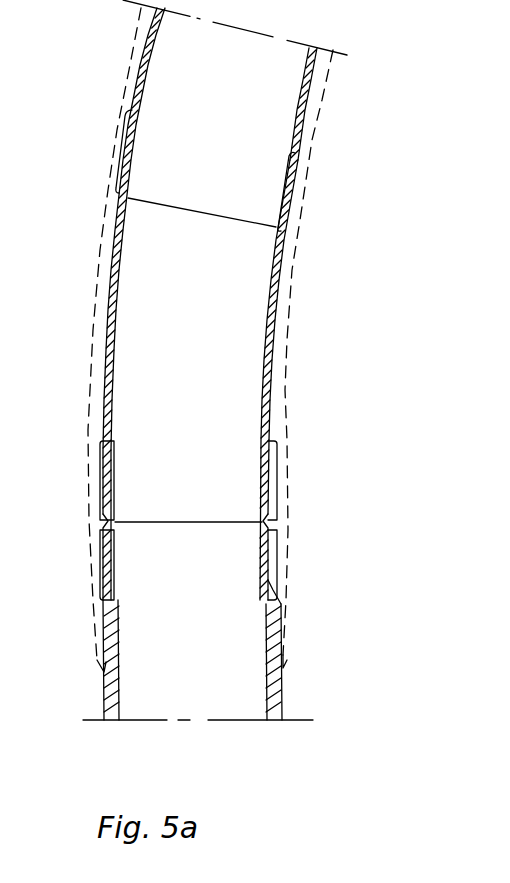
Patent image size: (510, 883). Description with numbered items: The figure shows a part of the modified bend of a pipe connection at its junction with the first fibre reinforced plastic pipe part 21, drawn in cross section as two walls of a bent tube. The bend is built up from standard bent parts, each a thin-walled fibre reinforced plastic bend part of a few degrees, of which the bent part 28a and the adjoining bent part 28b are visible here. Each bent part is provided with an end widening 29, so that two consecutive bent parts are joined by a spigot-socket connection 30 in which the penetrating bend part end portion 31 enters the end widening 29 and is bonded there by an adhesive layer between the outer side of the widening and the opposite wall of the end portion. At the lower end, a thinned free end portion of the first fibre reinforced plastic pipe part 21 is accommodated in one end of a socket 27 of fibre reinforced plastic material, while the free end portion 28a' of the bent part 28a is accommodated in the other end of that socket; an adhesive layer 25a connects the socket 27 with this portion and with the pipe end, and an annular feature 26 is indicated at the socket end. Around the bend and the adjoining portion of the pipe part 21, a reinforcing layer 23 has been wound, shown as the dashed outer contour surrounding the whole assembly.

The first fibre reinforced plastic pipe part 21 is at (273, 697).
The reinforcing layer 23 is at (100, 277).
The sleeve 25a is at (272, 478).
The annular bead 26 is at (273, 585).
The socket 27 is at (273, 552).
The standard bent part 28a is at (319, 380).
The free end portion of bent part 28a' is at (188, 498).
The standard bent part 28b is at (305, 98).
The end widening 29 is at (295, 185).
The spigot-socket connection 30 is at (115, 169).
The penetrating bend part end portion 31 is at (127, 163).